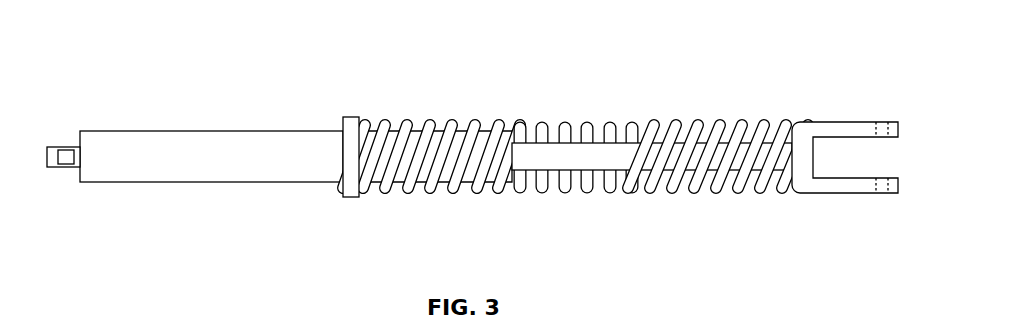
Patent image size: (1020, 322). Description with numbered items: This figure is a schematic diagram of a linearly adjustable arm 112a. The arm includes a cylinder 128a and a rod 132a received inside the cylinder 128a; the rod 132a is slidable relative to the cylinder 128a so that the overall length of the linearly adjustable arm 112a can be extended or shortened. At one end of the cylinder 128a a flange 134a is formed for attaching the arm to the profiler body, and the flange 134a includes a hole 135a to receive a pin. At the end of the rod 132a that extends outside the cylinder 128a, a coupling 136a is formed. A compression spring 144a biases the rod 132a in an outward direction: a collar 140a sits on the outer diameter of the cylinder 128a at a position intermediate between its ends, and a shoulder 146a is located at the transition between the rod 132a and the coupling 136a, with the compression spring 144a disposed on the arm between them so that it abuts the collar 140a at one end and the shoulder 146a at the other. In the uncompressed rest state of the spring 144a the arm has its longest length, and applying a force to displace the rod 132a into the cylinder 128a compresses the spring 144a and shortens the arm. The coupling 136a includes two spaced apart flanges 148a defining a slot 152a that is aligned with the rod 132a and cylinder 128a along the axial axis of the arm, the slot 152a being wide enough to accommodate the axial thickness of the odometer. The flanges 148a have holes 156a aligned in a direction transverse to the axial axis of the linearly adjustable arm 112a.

The linearly adjustable arm 112a is at (480, 149).
The cylinder 128a is at (245, 131).
The flange 134a is at (63, 148).
The hole 135a is at (62, 156).
The collar 140a is at (352, 117).
The compression spring 144a is at (430, 121).
The rod 132a is at (573, 152).
The shoulder 146a is at (790, 120).
The coupling 136a is at (846, 156).
The flanges 148a is at (855, 122).
The slot 152a is at (830, 140).
The holes 156a is at (887, 122).